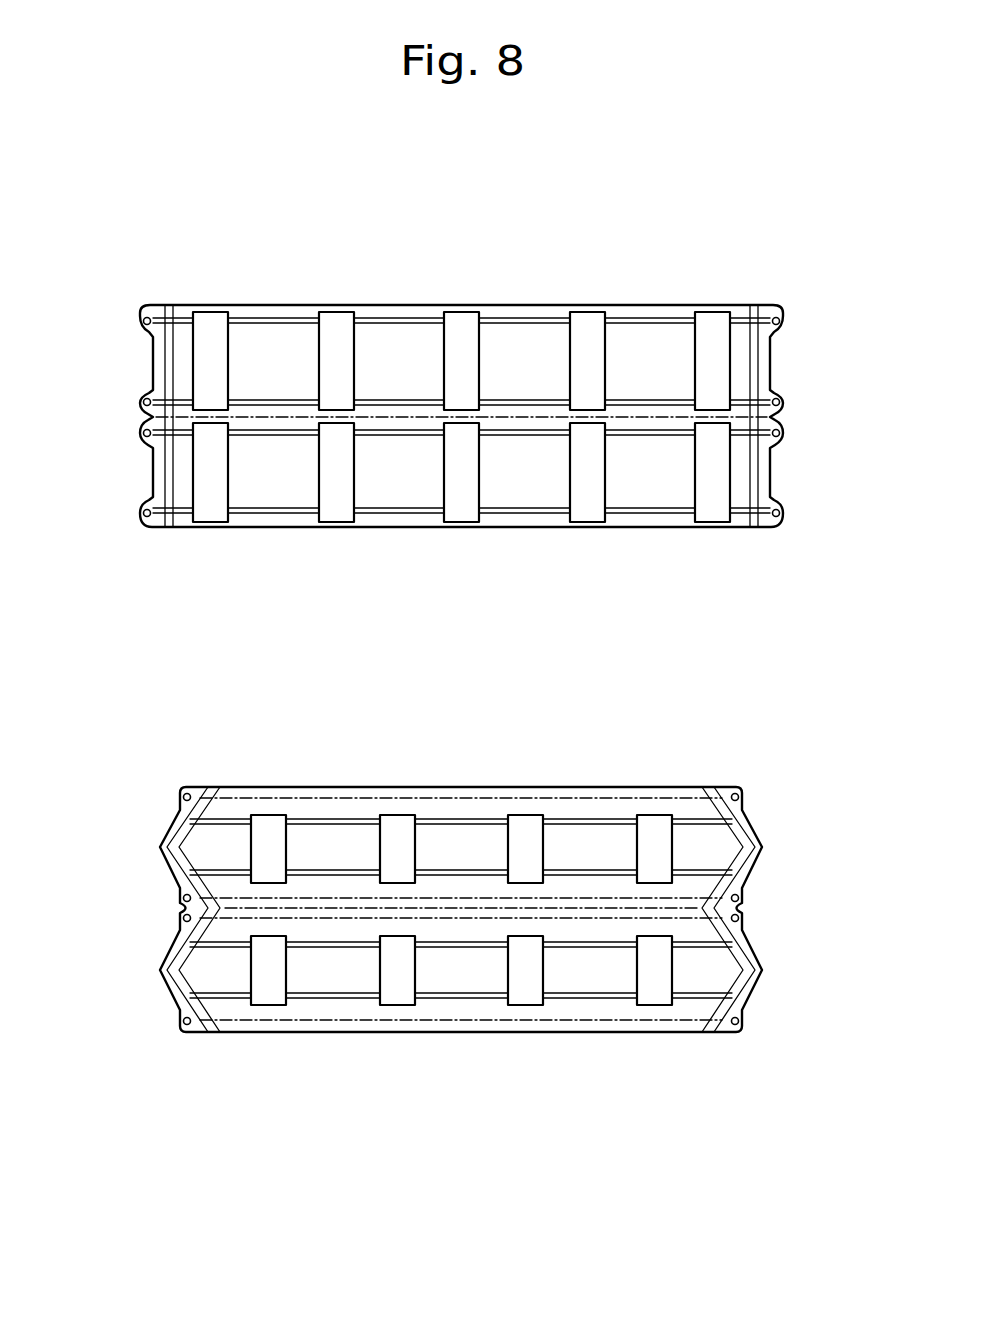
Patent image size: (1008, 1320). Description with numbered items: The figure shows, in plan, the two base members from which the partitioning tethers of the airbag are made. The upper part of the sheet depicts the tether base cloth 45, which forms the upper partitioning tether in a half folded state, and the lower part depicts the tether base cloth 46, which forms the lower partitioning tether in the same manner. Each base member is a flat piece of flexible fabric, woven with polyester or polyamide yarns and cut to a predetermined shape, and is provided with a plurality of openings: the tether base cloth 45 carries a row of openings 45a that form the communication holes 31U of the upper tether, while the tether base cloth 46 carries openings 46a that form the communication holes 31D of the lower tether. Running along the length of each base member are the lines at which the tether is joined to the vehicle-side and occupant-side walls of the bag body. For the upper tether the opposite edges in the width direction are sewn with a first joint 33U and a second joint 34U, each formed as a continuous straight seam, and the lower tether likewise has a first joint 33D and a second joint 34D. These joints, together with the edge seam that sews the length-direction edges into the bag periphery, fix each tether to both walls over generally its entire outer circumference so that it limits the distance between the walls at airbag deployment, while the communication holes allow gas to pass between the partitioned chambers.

The tether base cloth 45 is at (461, 389).
The communication hole 31U is at (461, 414).
The opening 45a is at (318, 340).
The second joint (sewn seam) 34U is at (400, 320).
The first joint (sewn seam) 33U is at (423, 400).
The tether base cloth 46 is at (462, 948).
The communication hole 31D is at (462, 929).
The opening 46a is at (636, 823).
The second joint (sewn seam) 34D is at (462, 820).
The first joint (sewn seam) 33D is at (335, 870).